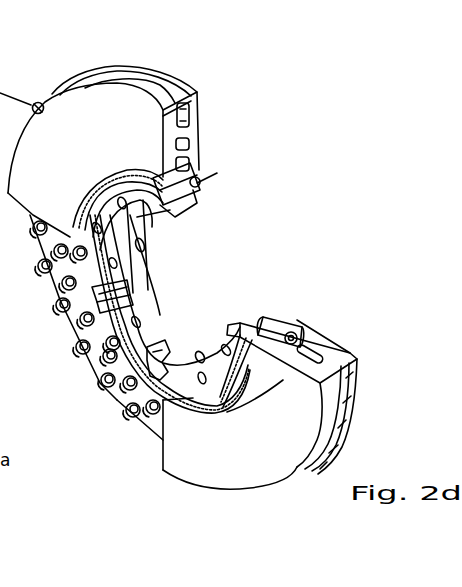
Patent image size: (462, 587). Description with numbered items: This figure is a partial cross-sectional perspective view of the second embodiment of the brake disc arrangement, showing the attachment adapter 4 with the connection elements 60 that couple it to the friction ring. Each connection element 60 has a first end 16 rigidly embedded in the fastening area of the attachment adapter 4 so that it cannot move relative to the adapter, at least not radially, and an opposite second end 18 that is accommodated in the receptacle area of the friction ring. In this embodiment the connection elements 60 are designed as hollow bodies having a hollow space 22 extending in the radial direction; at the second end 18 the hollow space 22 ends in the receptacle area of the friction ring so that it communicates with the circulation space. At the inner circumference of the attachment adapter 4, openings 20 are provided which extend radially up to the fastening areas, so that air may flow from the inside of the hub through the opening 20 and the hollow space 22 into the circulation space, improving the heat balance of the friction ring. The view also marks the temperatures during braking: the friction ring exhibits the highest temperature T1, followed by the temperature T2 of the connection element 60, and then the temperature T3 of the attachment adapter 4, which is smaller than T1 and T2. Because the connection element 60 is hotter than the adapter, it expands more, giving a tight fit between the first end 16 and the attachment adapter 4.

The attachment adapter 4 is at (178, 277).
The first end 16 is at (135, 358).
The second end 18 is at (133, 400).
The opening 20 is at (141, 245).
The hollow space 22 is at (165, 340).
The connection element 60 is at (150, 365).
The temperature of the friction ring T1 is at (318, 337).
The temperature of the connection element T2 is at (284, 326).
The temperature of the attachment adapter T3 is at (250, 312).